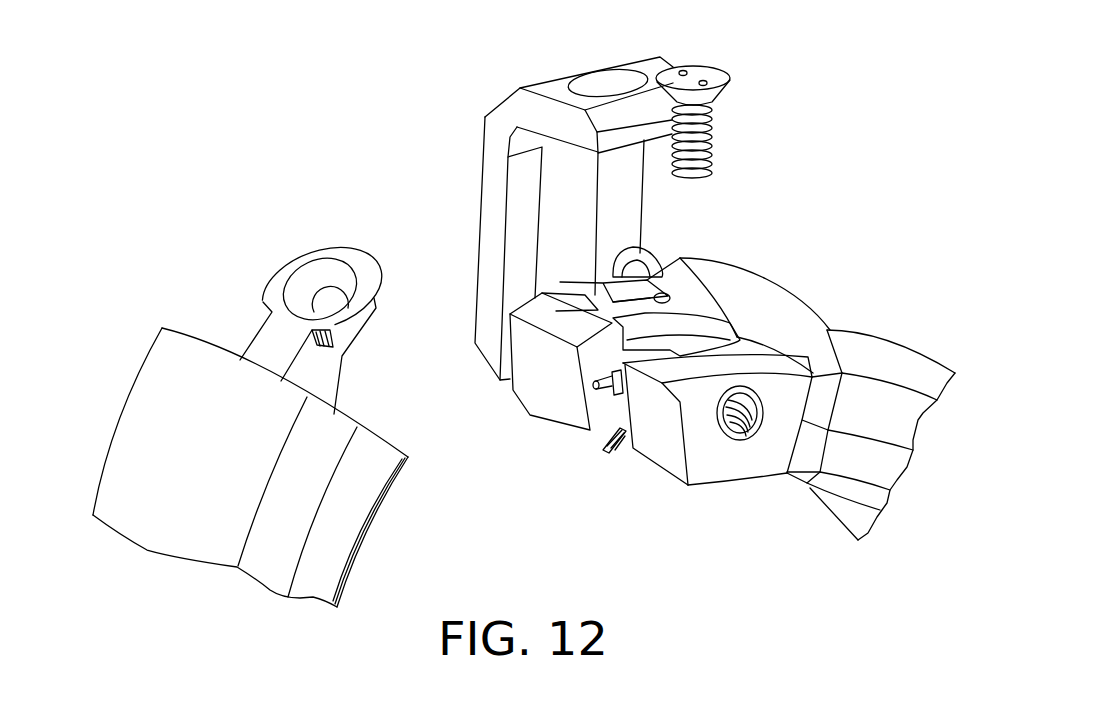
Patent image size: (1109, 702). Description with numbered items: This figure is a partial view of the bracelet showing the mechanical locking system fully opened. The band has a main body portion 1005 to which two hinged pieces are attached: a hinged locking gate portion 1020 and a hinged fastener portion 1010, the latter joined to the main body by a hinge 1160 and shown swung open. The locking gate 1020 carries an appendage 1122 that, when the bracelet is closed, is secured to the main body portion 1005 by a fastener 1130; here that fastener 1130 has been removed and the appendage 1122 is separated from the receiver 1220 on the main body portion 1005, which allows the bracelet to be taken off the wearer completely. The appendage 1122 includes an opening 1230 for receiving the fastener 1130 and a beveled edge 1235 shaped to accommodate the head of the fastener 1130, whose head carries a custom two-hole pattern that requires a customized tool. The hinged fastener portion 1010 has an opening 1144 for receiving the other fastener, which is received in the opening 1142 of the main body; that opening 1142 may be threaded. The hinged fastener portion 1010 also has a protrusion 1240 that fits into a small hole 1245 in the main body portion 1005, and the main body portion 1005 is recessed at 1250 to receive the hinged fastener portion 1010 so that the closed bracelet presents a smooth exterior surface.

The main body portion 1005 is at (852, 318).
The hinged fastener portion 1010 is at (493, 177).
The hinged locking gate portion 1020 is at (183, 503).
The appendage 1122 is at (325, 248).
The fastener 1130 is at (707, 73).
The opening 1142 is at (745, 423).
The opening 1144 is at (598, 82).
The hinge 1160 is at (585, 300).
The receiver 1220 is at (620, 430).
The opening 1230 is at (323, 302).
The beveled edge 1235 is at (342, 272).
The protrusion 1240 is at (647, 250).
The small hole 1245 is at (664, 293).
The recess 1250 is at (750, 340).